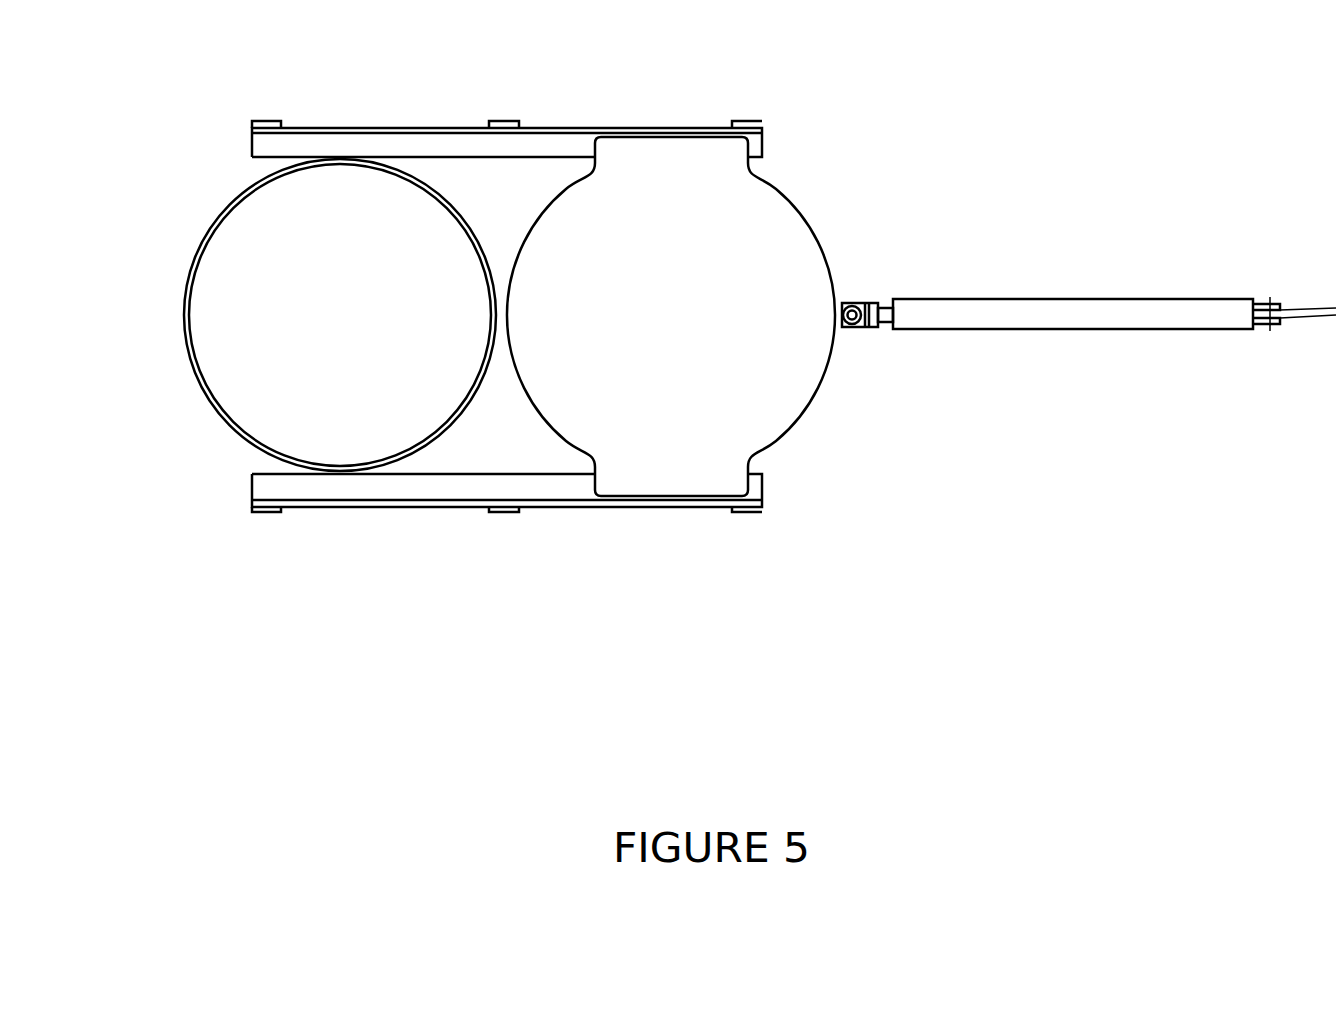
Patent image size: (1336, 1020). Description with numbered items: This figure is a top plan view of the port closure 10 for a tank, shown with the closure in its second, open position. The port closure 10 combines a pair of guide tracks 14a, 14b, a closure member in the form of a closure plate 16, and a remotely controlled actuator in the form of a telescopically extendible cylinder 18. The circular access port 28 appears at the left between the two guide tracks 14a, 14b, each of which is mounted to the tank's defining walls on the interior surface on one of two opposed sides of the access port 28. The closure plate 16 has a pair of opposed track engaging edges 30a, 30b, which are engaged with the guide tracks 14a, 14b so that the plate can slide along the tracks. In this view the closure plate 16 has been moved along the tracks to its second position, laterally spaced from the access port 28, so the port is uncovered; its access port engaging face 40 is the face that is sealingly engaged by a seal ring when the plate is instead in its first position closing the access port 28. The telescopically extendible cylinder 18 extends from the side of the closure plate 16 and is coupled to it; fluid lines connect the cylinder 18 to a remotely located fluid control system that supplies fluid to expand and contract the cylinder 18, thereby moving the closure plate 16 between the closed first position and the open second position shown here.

The port closure 10 is at (162, 143).
The guide track 14a is at (423, 143).
The guide track 14b is at (375, 488).
The closure plate 16 is at (660, 215).
The telescopically extendible cylinder 18 is at (1093, 310).
The access port 28 is at (200, 373).
The track engaging edge 30a is at (677, 150).
The track engaging edge 30b is at (680, 478).
The access port engaging face 40 is at (733, 398).